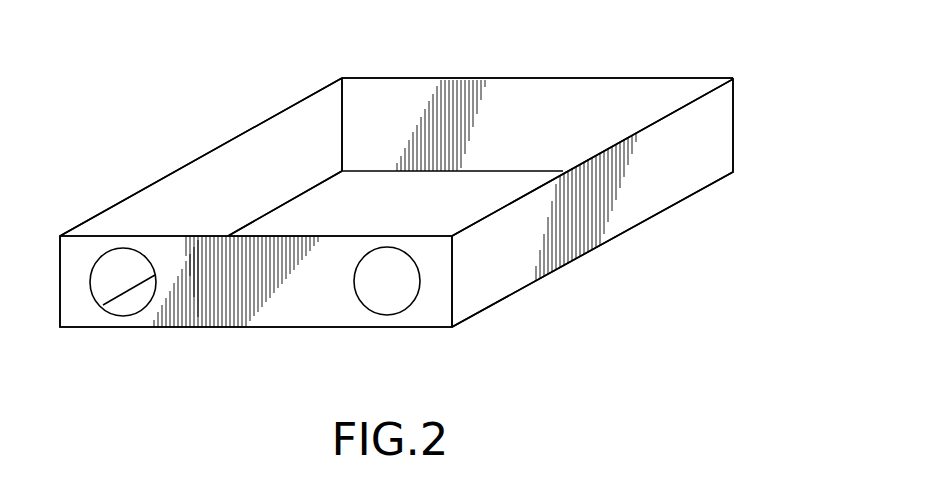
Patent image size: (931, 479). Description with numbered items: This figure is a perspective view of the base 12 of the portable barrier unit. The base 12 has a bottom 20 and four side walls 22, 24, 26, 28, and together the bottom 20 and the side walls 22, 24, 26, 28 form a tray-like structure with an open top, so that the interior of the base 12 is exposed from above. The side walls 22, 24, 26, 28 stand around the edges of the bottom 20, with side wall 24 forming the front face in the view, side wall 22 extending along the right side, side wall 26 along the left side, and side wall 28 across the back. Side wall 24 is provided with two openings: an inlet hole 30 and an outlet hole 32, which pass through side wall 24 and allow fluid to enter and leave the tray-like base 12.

The base 12 is at (148, 122).
The bottom 20 is at (440, 207).
The side wall 22 is at (505, 278).
The side wall 24 is at (250, 310).
The side wall 26 is at (250, 160).
The side wall 28 is at (577, 107).
The inlet hole 30 is at (377, 313).
The outlet hole 32 is at (105, 308).